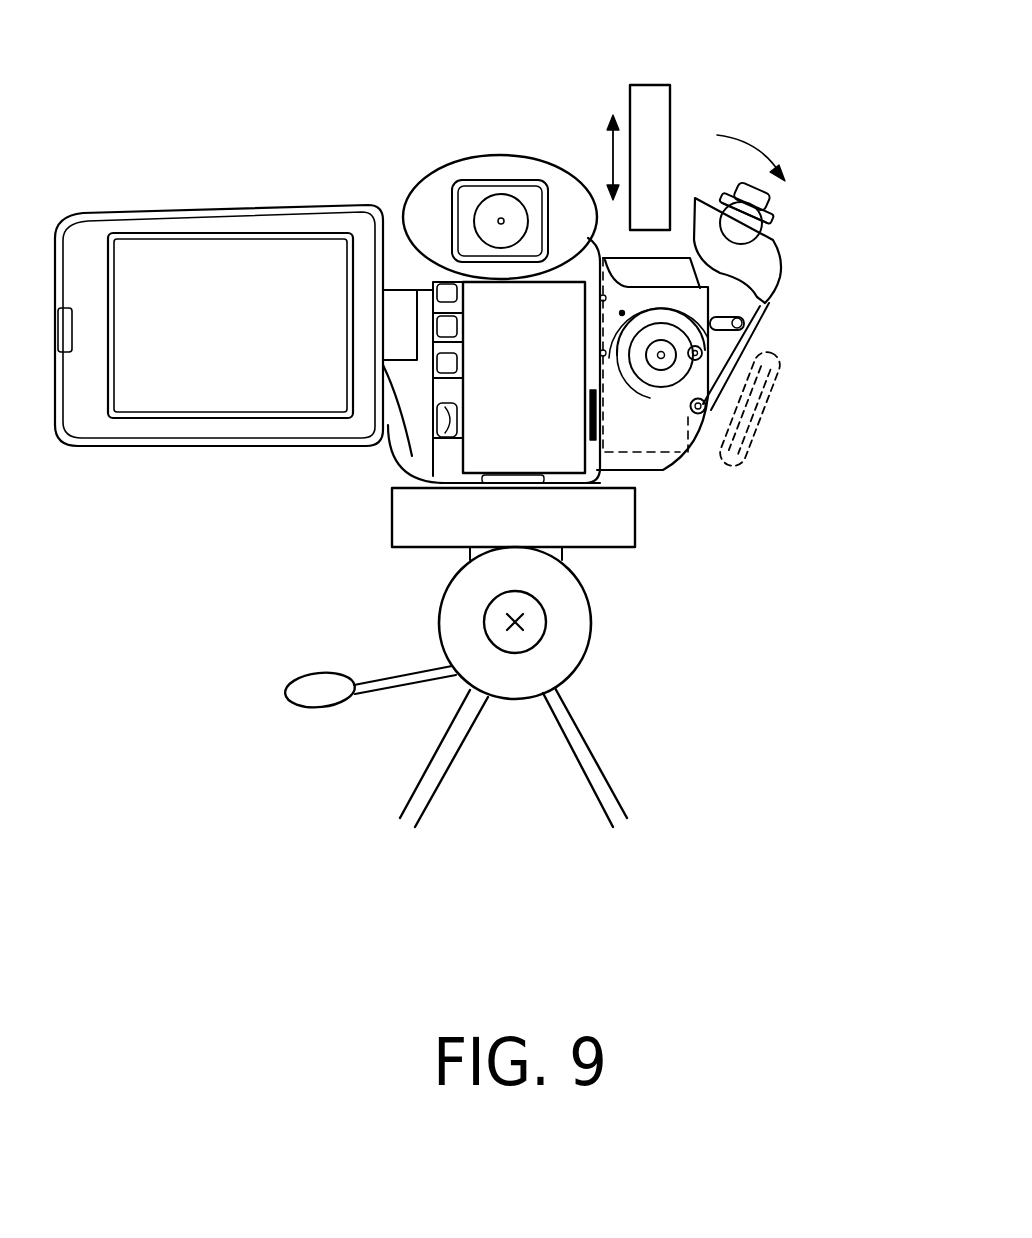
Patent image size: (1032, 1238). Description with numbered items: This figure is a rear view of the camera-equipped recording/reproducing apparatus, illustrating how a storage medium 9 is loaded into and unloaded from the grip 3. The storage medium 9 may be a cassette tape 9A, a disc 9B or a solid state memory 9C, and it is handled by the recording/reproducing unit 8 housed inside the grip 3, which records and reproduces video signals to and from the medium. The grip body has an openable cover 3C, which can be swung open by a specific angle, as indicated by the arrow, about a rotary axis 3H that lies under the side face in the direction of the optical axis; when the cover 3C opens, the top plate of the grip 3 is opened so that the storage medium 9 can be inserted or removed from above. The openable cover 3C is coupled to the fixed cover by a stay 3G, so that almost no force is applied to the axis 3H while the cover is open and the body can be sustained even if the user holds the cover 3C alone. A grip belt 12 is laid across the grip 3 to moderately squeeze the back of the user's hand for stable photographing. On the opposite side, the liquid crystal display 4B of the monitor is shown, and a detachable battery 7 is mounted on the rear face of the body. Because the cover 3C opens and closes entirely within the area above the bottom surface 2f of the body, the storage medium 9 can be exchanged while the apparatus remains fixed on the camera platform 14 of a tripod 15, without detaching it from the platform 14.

The storage medium 9 is at (675, 119).
The cassette tape 9A is at (650, 157).
The disc 9B is at (650, 157).
The solid state memory 9C is at (648, 83).
The liquid crystal display 4B is at (145, 418).
The detachable battery 7 is at (473, 456).
The camera platform 14 is at (392, 515).
The bottom surface 2f is at (568, 488).
The tripod 15 is at (578, 647).
The recording/reproducing unit 8 is at (648, 453).
The grip 3 is at (790, 369).
The openable cover 3C is at (778, 245).
The stay 3G is at (738, 316).
The rotary axis 3H is at (706, 411).
The grip belt 12 is at (778, 392).